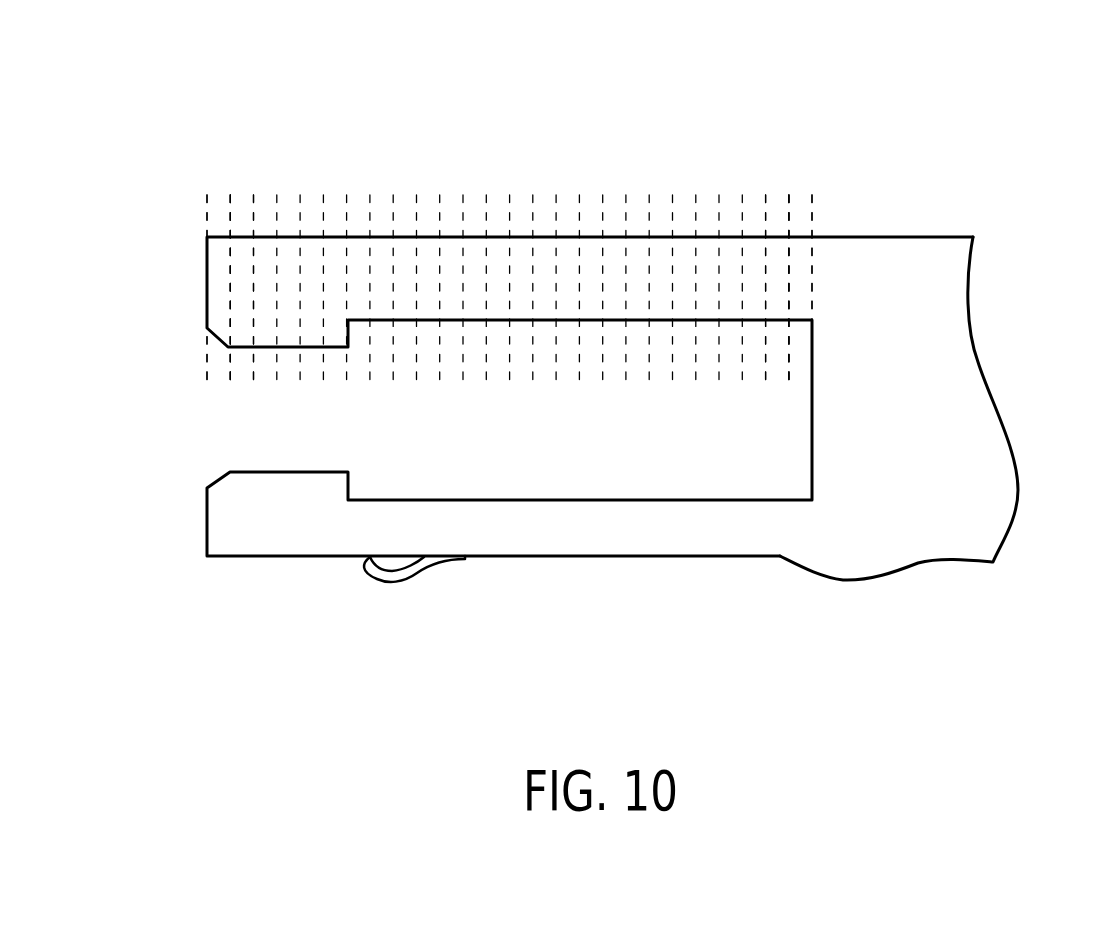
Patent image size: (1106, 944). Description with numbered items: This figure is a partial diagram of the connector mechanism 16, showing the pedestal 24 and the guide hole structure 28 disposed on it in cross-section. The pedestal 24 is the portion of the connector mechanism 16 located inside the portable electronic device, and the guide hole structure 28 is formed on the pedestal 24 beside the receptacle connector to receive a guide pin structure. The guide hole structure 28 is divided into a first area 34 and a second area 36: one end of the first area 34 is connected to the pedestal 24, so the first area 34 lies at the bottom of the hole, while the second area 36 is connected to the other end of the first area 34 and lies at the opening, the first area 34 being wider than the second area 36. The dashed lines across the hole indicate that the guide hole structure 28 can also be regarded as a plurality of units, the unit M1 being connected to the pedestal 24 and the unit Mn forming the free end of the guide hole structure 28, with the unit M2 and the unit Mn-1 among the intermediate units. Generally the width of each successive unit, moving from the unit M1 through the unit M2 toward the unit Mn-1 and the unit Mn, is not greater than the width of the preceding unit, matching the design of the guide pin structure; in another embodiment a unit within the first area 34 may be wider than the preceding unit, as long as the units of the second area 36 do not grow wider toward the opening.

The connector mechanism 16 is at (1003, 146).
The pedestal 24 is at (968, 397).
The guide hole structure 28 is at (563, 138).
The first area 34 is at (812, 187).
The second area 36 is at (347, 187).
The unit Mn is at (222, 327).
The unit Mn-1 is at (243, 327).
The unit M2 is at (777, 308).
The unit M1 is at (804, 308).